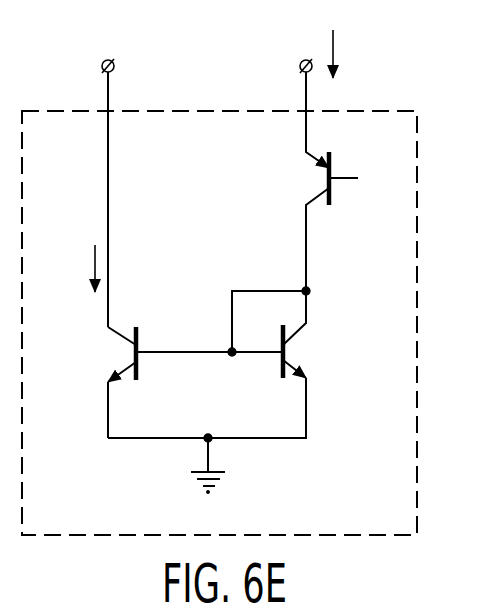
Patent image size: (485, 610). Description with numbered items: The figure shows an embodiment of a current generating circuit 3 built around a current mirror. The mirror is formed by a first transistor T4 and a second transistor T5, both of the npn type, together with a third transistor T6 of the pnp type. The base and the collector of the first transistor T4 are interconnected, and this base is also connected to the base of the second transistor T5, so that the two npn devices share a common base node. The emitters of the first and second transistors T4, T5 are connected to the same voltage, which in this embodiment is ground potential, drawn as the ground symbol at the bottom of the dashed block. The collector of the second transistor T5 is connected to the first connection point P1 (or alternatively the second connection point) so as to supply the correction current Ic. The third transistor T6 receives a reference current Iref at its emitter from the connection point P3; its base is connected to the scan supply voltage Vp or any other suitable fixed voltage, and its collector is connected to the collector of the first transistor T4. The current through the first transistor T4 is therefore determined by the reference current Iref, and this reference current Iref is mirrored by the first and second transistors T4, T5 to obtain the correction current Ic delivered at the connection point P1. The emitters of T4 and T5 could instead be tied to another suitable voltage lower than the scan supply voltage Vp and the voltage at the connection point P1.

The current generating circuit 3 is at (415, 145).
The second transistor T5 is at (139, 365).
The first transistor T4 is at (279, 365).
The third transistor T6 is at (318, 180).
The first connection point P1 is at (111, 177).
The connection point P3 is at (306, 50).
The correction current Ic is at (83, 268).
The reference current Iref is at (355, 53).
The scan supply voltage Vp is at (381, 180).